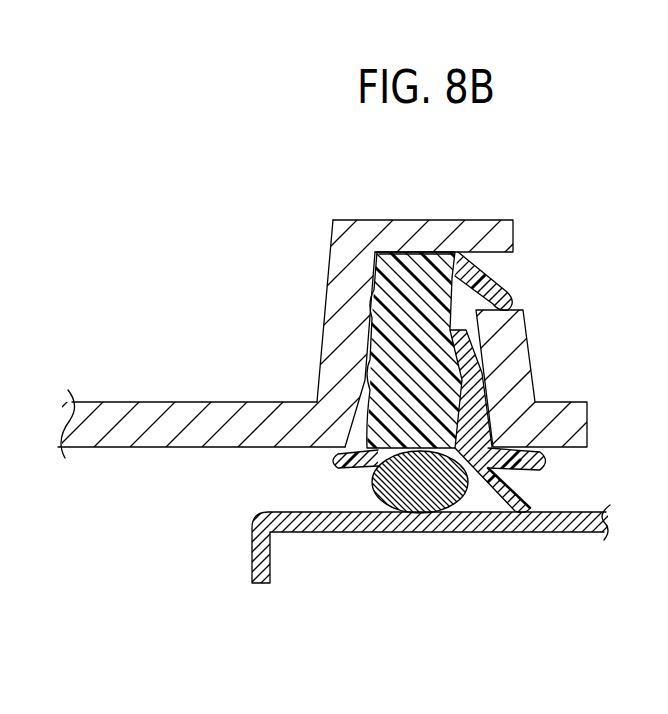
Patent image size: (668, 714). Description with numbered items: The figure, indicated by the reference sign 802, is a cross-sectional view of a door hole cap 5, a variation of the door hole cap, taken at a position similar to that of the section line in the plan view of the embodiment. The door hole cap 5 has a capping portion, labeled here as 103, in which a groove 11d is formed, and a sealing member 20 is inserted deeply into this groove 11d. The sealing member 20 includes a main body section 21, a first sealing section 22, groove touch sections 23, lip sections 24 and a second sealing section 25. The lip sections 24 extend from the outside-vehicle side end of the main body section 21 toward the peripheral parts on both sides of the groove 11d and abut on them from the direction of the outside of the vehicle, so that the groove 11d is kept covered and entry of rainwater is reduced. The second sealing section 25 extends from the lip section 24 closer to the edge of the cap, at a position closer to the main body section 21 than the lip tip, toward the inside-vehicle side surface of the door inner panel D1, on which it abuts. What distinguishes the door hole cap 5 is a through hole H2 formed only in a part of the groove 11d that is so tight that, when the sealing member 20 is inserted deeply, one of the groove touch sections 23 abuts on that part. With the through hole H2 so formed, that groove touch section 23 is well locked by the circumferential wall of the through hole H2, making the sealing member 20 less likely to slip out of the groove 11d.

The cross-sectional view 802 is at (99, 175).
The door hole cap 5 is at (204, 282).
The groove 11d is at (478, 232).
The frame 103 is at (128, 425).
The sealing member 20 is at (403, 315).
The main body section 21 is at (415, 265).
The first sealing section 22 is at (426, 495).
The groove touch section 23 is at (488, 288).
The lip section 24 is at (333, 456).
The second sealing section 25 is at (540, 490).
The door inner panel D1 is at (337, 523).
The through hole H2 is at (536, 290).